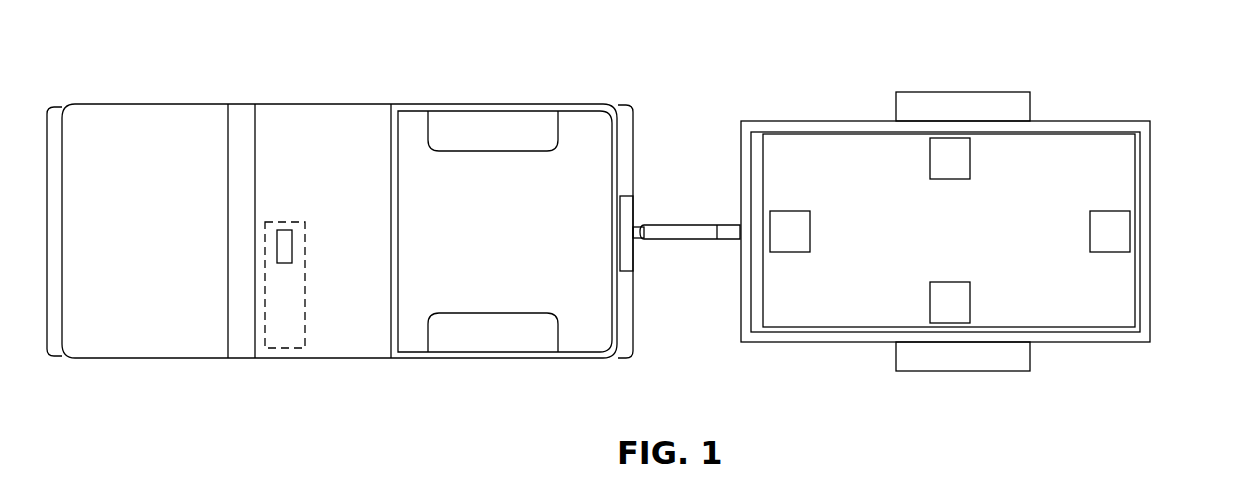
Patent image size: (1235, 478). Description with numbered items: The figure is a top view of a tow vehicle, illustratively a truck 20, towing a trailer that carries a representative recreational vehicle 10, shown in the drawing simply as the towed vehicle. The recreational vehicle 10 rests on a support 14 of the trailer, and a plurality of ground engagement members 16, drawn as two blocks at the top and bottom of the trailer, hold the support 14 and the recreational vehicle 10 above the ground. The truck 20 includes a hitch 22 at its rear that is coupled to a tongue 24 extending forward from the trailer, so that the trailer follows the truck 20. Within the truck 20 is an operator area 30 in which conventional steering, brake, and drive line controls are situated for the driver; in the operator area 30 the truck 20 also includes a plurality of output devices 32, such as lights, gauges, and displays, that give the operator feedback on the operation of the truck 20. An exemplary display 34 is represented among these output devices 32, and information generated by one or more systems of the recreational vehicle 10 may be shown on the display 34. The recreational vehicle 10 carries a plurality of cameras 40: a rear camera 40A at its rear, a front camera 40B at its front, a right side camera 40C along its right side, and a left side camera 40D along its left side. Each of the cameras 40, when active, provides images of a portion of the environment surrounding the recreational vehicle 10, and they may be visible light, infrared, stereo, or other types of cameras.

The recreational vehicle 10 is at (1050, 252).
The support 14 is at (758, 130).
The ground engagement members 16 is at (973, 85).
The truck 20 is at (523, 80).
The hitch 22 is at (643, 247).
The tongue 24 is at (692, 214).
The operator area 30 is at (337, 155).
The output devices 32 is at (282, 350).
The display 34 is at (285, 228).
The cameras 40 is at (1104, 170).
The rear camera 40A is at (1113, 252).
The front camera 40B is at (793, 252).
The right side camera 40C is at (930, 160).
The left side camera 40D is at (930, 301).